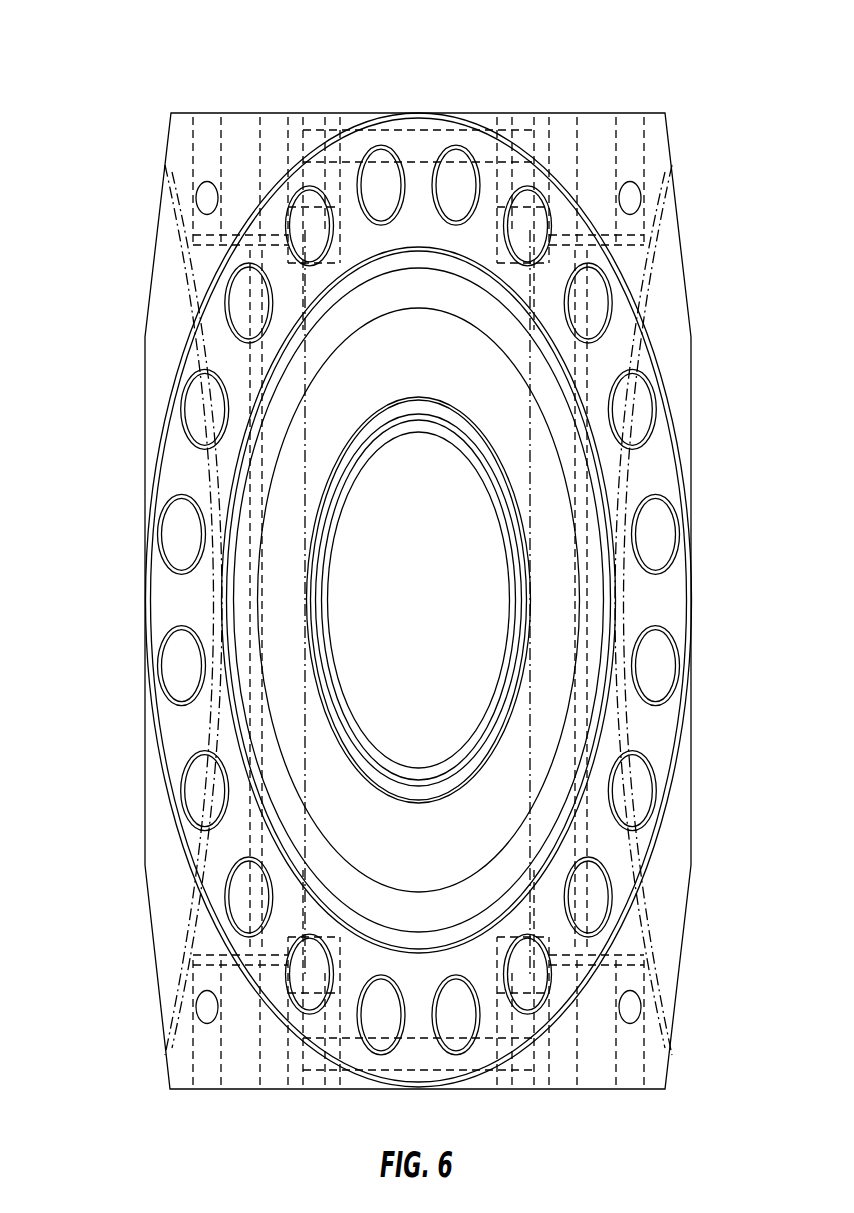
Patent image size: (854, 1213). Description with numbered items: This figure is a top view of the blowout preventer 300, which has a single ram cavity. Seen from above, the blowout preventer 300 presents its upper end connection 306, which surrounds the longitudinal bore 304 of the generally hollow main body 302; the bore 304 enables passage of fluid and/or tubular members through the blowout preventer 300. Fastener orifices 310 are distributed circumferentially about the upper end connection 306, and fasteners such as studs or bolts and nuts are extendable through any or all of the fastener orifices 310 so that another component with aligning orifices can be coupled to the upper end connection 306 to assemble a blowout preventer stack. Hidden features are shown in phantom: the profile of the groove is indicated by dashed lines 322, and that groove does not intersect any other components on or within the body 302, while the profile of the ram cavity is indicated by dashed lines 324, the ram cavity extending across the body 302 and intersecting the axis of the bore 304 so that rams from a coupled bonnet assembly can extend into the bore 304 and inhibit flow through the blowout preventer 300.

The blowout preventer 300 is at (118, 58).
The main body 302 is at (657, 142).
The bore 304 is at (437, 617).
The upper end connection 306 is at (558, 225).
The fastener orifices 310 is at (293, 200).
The dashed lines 322 is at (622, 480).
The dashed lines 324 is at (305, 493).